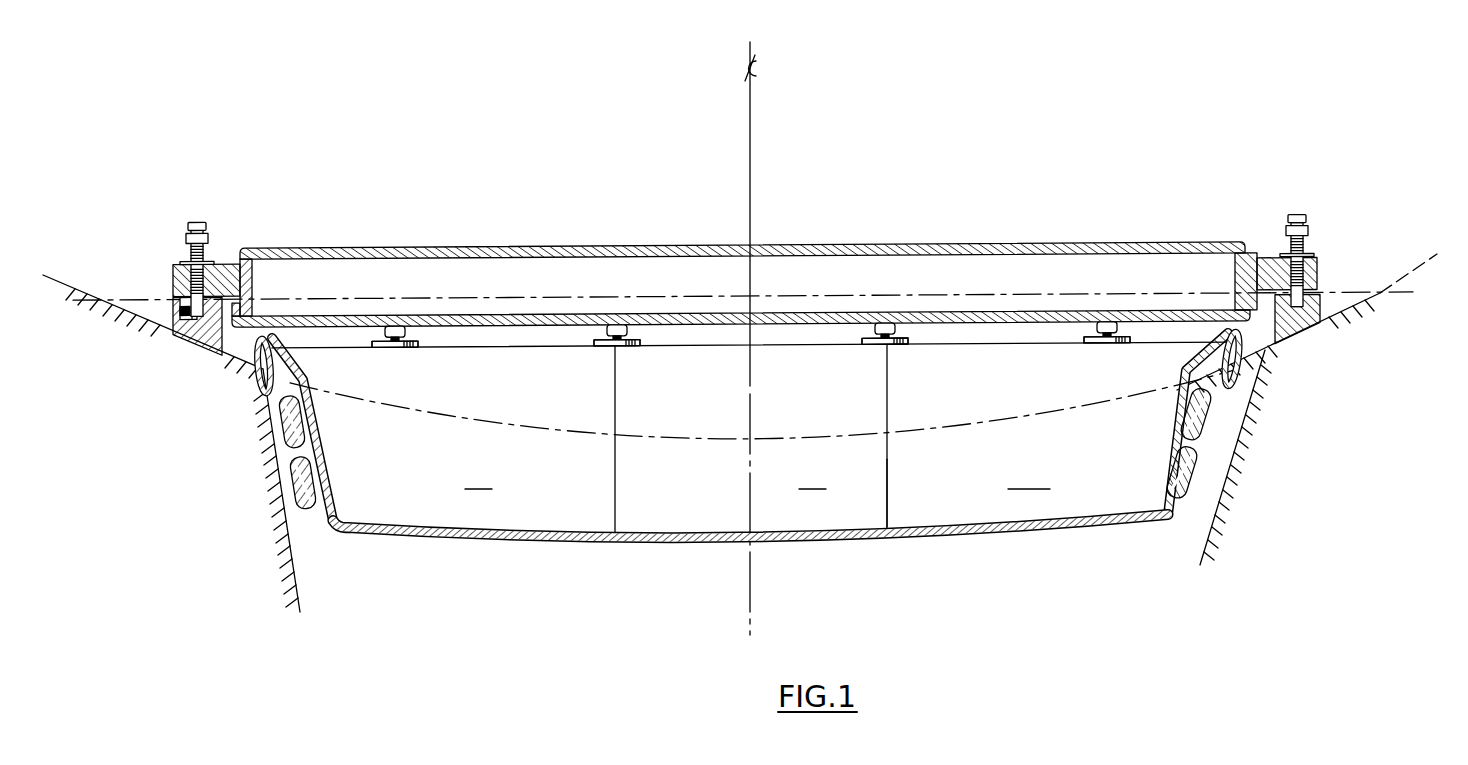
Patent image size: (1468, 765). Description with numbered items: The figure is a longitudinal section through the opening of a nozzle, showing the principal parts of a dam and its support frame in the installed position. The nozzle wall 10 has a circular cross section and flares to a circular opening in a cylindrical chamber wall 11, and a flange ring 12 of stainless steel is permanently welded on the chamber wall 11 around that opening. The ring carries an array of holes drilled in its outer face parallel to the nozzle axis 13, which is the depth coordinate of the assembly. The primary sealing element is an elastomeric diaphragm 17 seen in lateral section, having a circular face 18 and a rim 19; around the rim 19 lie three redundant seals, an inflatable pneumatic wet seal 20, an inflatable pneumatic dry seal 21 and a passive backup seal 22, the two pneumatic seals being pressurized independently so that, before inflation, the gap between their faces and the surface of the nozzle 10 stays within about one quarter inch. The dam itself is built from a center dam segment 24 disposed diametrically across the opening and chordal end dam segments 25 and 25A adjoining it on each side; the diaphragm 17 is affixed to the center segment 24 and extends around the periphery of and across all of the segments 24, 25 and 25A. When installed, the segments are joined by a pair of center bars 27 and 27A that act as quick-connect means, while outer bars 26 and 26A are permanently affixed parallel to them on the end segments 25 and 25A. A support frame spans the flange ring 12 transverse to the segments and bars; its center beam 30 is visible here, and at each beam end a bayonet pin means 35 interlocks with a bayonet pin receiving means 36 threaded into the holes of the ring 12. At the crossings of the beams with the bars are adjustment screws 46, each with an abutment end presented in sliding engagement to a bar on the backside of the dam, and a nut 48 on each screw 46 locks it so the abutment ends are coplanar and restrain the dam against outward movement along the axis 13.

The nozzle wall 10 is at (306, 574).
The cylindrical chamber wall 11 is at (75, 289).
The flange ring 12 is at (213, 367).
The nozzle axis 13 is at (752, 203).
The diaphragm 17 is at (668, 539).
The circular face 18 is at (889, 547).
The rim 19 is at (325, 447).
The inflatable pneumatic wet seal 20 is at (297, 502).
The inflatable pneumatic dry seal 21 is at (283, 445).
The passive backup seal 22 is at (262, 397).
The center dam segment 24 is at (762, 438).
The chordal end dam segment 25 is at (478, 478).
The chordal end dam segment 25A is at (1029, 478).
The outer bar 26 is at (410, 348).
The outer bar 26A is at (1103, 346).
The center bar 27 is at (630, 348).
The center bar 27A is at (906, 346).
The center beam 30 is at (637, 246).
The bayonet pin means 35 is at (185, 257).
The bayonet pin receiving means 36 is at (172, 313).
The adjustment screw 46 is at (407, 332).
The nut 48 is at (400, 322).